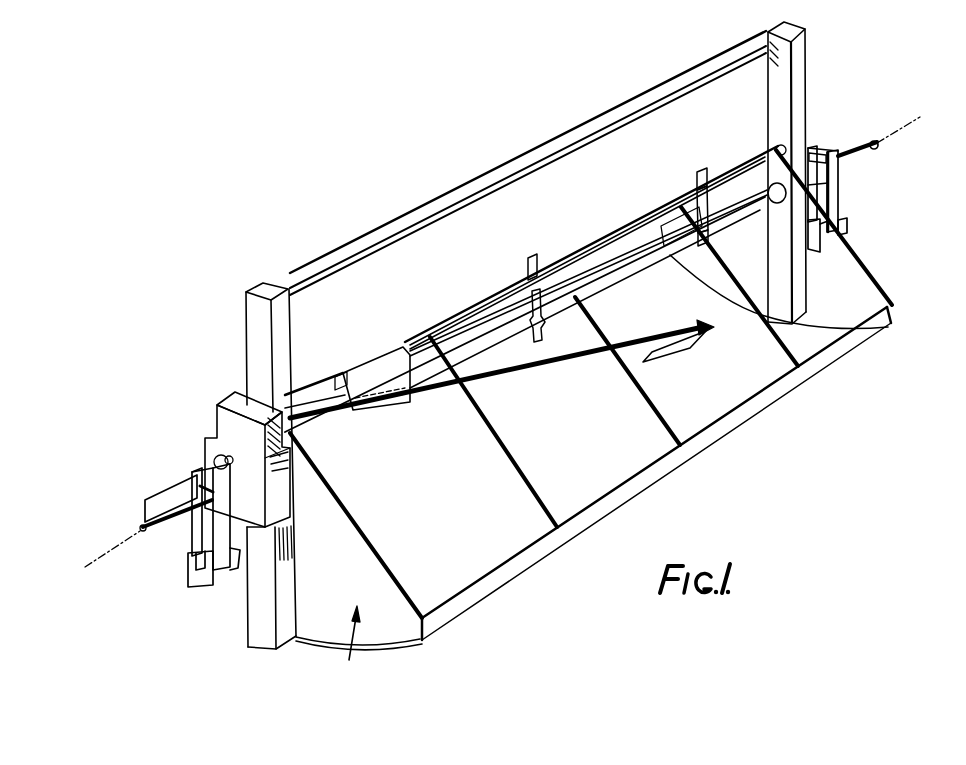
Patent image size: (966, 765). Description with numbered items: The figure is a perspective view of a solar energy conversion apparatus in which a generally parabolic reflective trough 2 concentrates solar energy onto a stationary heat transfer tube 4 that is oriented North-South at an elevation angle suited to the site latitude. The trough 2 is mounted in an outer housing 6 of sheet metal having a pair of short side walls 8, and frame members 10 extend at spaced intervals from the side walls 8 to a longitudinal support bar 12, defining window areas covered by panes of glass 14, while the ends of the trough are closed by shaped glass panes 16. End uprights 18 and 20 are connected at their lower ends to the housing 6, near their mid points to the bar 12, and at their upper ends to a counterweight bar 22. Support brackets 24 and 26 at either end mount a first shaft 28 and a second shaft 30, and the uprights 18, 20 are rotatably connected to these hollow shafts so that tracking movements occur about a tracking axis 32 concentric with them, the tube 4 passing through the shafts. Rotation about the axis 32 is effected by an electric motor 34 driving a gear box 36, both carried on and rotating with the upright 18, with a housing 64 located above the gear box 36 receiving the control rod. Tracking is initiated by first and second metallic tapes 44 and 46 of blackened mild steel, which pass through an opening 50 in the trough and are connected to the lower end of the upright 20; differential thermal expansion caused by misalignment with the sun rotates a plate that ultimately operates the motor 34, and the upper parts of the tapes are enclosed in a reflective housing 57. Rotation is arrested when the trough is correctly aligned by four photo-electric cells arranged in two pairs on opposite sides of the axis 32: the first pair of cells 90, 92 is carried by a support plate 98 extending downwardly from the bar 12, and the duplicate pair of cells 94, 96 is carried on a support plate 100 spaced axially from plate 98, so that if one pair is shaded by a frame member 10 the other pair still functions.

The parabolic reflective trough 2 is at (350, 647).
The heat transfer tube 4 is at (168, 522).
The outer housing 6 is at (380, 643).
The side walls 8 is at (143, 511).
The frame members 10 is at (390, 583).
The longitudinal support bar 12 is at (467, 313).
The panes of glass 14 is at (493, 545).
The glass panes 16 is at (325, 593).
The end upright 18 is at (257, 623).
The end upright 20 is at (795, 72).
The counterweight bar 22 is at (480, 170).
The support bracket 24 is at (200, 576).
The support bracket 26 is at (837, 192).
The first shaft 28 is at (193, 475).
The second shaft 30 is at (816, 162).
The tracking axis 32 is at (110, 556).
The electric motor 34 is at (208, 460).
The gear box 36 is at (213, 433).
The first metallic tape 44 is at (605, 350).
The second metallic tape 46 is at (633, 345).
The opening 50 is at (677, 347).
The reflective housing 57 is at (380, 357).
The housing 64 is at (285, 407).
The photo-electric cell 90 is at (537, 337).
The photo-electric cell 92 is at (542, 320).
The photo-electric cell 94 is at (705, 240).
The photo-electric cell 96 is at (697, 193).
The support plate 98 is at (526, 267).
The support plate 100 is at (701, 173).